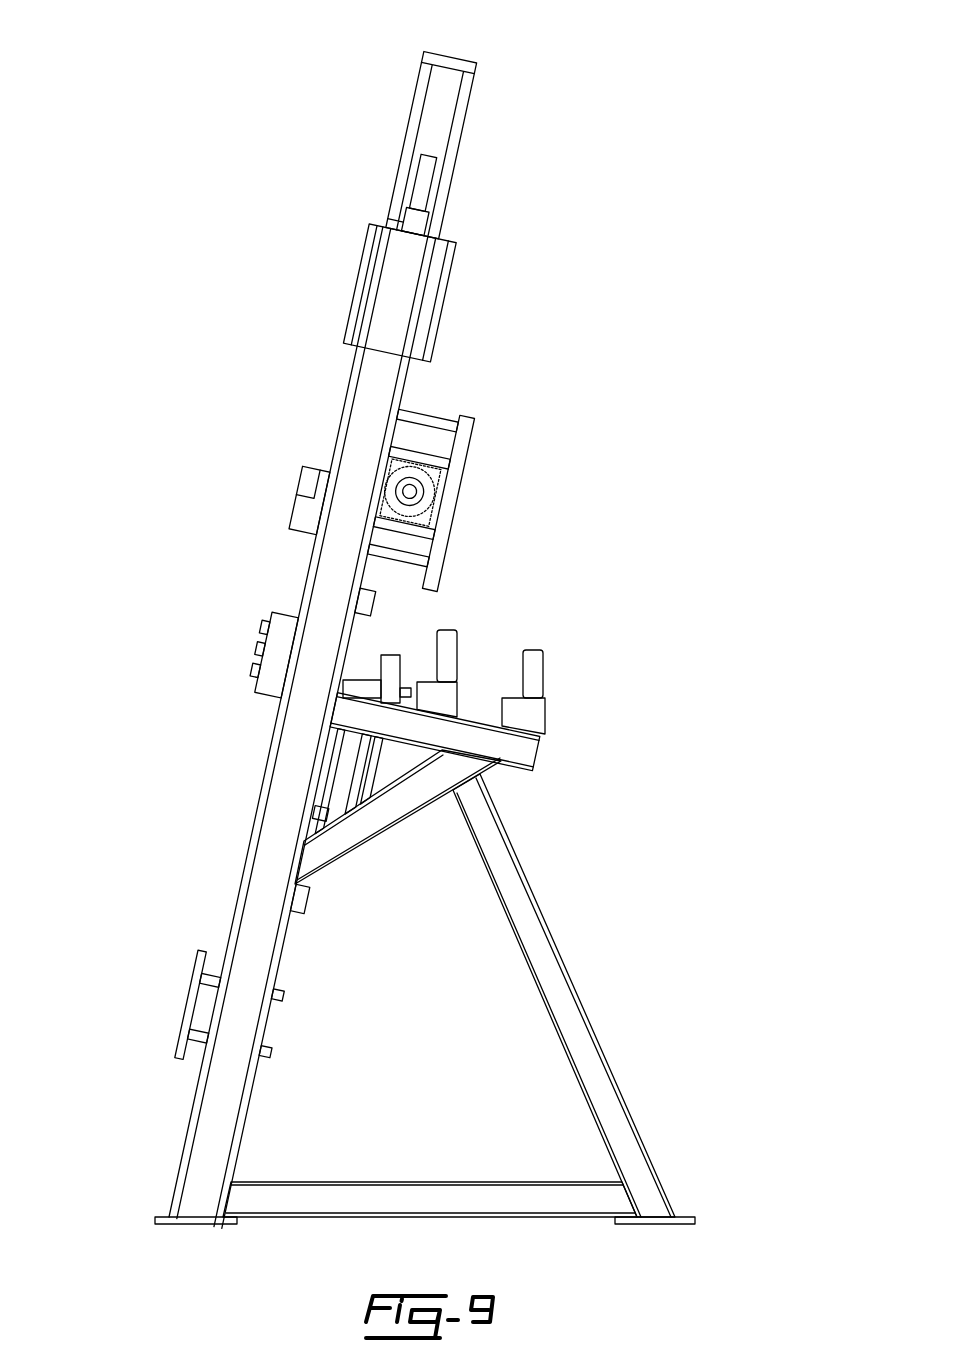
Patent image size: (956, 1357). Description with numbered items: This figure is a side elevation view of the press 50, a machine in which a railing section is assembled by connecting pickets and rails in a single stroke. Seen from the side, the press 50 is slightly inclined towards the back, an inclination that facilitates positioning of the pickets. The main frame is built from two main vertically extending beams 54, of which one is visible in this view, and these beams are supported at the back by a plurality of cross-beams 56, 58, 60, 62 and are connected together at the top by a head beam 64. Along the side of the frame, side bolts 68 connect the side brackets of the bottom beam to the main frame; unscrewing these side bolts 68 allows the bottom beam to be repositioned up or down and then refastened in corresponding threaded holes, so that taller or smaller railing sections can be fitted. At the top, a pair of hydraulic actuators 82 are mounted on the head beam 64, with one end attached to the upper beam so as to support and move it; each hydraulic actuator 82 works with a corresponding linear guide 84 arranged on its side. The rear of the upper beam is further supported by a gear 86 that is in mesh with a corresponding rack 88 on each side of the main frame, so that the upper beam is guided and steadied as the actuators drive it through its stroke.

The press 50 is at (151, 121).
The main vertically extending beam 54 is at (370, 417).
The cross-beam 56 is at (403, 1182).
The cross-beam 58 is at (585, 1000).
The cross-beam 60 is at (365, 825).
The cross-beam 62 is at (520, 745).
The head beam 64 is at (456, 313).
The side bolt 68 is at (176, 1020).
The hydraulic actuator 82 is at (462, 103).
The linear guide 84 is at (424, 193).
The gear 86 is at (420, 487).
The rack 88 is at (450, 515).